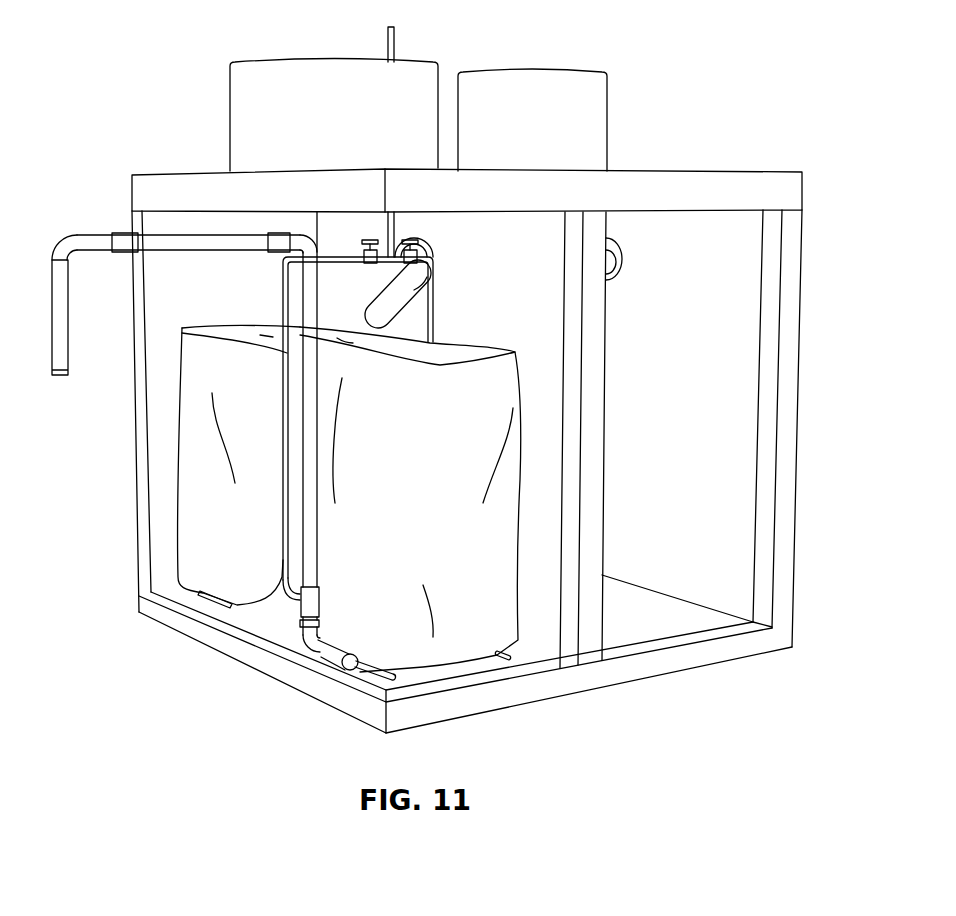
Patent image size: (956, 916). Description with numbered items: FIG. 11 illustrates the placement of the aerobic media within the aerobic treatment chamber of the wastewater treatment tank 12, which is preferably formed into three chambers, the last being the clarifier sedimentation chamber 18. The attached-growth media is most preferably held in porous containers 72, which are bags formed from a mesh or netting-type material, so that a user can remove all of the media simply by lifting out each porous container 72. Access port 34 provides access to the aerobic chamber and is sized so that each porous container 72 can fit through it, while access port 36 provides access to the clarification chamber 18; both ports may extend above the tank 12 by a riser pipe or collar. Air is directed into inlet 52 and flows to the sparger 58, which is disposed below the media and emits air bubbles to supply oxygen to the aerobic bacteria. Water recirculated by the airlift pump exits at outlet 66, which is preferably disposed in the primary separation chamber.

The wastewater treatment tank 12 is at (790, 188).
The access port 34 is at (242, 103).
The access port 36 is at (594, 122).
The inlet 52 is at (387, 40).
The clarifier sedimentation chamber 18 is at (746, 372).
The outlet 66 is at (55, 376).
The porous container 72 is at (190, 515).
The sparger 58 is at (522, 663).